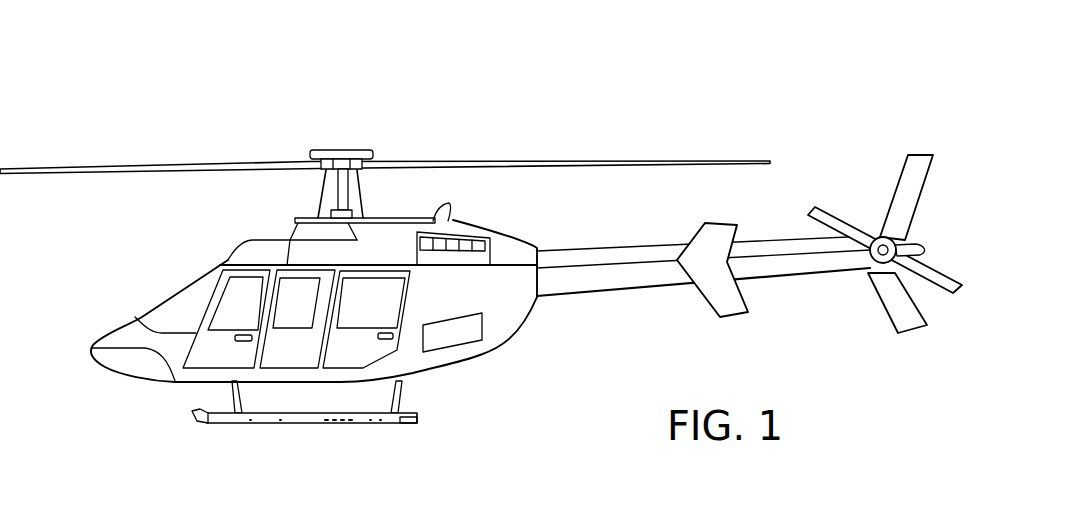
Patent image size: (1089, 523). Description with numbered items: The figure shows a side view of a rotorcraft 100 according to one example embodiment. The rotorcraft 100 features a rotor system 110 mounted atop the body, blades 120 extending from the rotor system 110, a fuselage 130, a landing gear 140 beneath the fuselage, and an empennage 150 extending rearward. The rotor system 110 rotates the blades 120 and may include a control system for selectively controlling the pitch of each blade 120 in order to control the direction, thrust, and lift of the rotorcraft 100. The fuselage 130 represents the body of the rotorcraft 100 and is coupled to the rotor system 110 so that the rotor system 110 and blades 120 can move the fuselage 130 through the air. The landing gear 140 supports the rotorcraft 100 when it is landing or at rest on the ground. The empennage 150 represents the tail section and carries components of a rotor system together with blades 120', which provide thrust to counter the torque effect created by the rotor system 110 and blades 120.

The rotorcraft 100 is at (189, 105).
The rotor system 110 is at (340, 148).
The blades 120 is at (385, 138).
The blades 120' is at (924, 244).
The fuselage 130 is at (135, 378).
The landing gear 140 is at (285, 427).
The empennage 150 is at (617, 295).